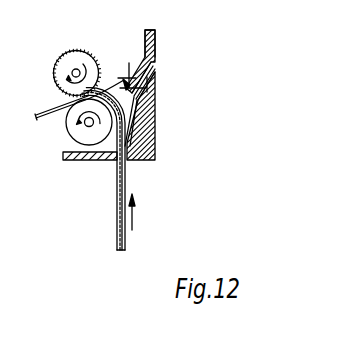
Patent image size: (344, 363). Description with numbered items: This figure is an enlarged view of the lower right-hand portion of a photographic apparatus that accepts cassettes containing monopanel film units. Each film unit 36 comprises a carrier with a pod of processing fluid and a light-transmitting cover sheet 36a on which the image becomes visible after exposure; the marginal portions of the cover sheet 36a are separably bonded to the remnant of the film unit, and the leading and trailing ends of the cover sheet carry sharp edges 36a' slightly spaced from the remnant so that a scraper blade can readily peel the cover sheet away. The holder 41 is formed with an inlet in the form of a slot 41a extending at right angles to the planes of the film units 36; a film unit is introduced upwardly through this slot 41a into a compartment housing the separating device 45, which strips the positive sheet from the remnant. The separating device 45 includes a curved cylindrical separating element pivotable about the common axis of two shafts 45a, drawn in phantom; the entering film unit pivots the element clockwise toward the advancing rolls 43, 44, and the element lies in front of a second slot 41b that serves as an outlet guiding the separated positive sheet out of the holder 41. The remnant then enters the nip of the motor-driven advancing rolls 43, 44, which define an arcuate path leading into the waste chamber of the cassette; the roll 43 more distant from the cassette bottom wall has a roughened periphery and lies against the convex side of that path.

The advancing roll 43 is at (67, 58).
The advancing roll 44 is at (73, 133).
The film unit 36 is at (117, 222).
The cover sheet 36a is at (156, 144).
The sharp edge 36a' is at (198, 80).
The holder 41 is at (149, 136).
The slot 41a is at (113, 156).
The second slot 41b is at (150, 72).
The separating device 45 is at (142, 98).
The shaft 45a is at (124, 79).